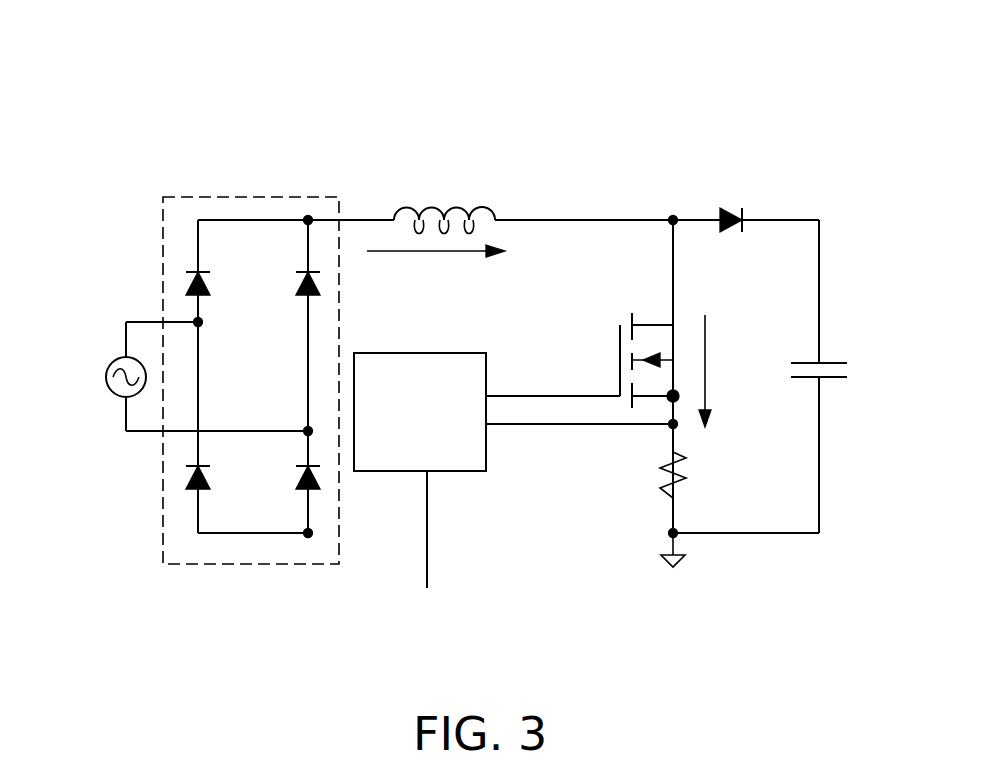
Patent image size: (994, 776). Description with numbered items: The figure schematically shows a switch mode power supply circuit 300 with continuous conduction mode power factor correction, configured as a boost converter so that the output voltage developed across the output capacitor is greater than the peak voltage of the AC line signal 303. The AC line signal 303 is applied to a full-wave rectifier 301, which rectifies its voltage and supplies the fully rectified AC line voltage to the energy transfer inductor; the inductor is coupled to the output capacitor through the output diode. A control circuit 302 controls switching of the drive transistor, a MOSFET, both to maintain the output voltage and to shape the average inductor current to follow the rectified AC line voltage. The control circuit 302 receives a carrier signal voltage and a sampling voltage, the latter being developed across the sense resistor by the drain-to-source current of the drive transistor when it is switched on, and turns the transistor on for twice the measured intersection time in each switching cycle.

The switch mode power supply circuit 300 is at (252, 122).
The full-wave rectifier 301 is at (243, 564).
The control circuit 302 is at (392, 353).
The AC line signal 303 is at (112, 362).